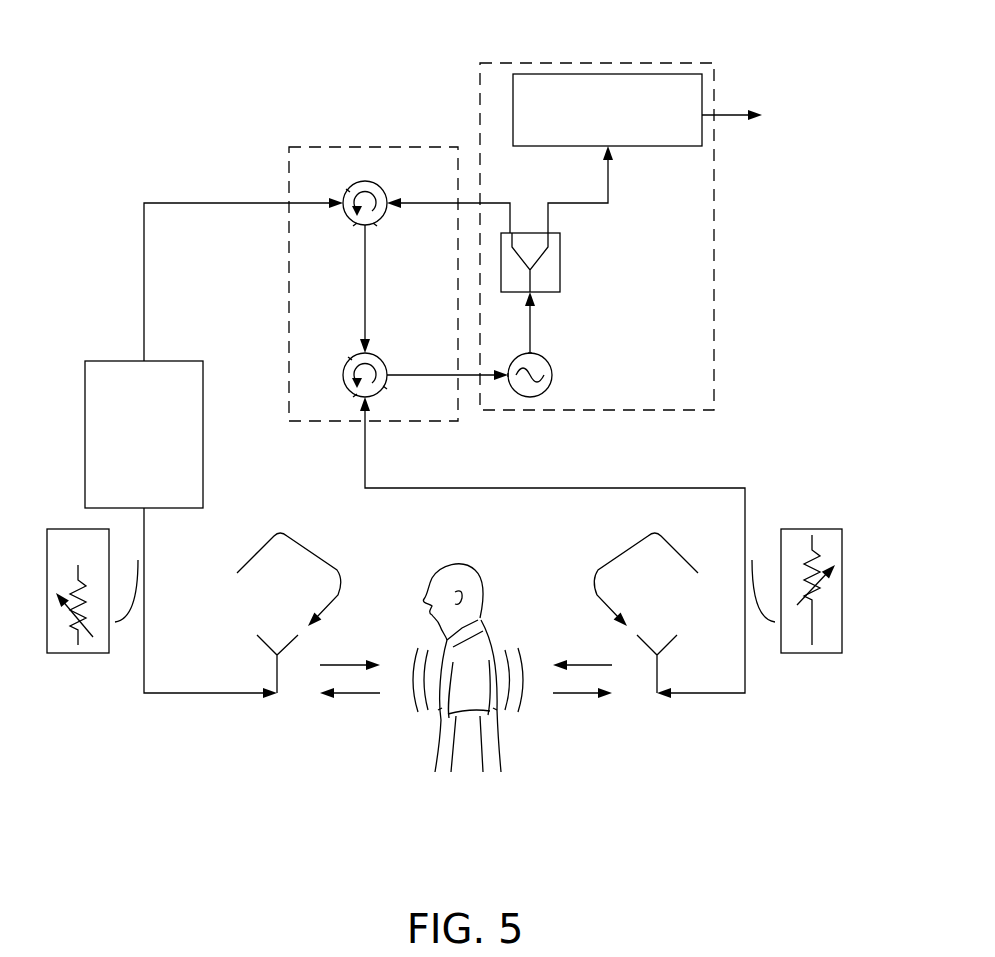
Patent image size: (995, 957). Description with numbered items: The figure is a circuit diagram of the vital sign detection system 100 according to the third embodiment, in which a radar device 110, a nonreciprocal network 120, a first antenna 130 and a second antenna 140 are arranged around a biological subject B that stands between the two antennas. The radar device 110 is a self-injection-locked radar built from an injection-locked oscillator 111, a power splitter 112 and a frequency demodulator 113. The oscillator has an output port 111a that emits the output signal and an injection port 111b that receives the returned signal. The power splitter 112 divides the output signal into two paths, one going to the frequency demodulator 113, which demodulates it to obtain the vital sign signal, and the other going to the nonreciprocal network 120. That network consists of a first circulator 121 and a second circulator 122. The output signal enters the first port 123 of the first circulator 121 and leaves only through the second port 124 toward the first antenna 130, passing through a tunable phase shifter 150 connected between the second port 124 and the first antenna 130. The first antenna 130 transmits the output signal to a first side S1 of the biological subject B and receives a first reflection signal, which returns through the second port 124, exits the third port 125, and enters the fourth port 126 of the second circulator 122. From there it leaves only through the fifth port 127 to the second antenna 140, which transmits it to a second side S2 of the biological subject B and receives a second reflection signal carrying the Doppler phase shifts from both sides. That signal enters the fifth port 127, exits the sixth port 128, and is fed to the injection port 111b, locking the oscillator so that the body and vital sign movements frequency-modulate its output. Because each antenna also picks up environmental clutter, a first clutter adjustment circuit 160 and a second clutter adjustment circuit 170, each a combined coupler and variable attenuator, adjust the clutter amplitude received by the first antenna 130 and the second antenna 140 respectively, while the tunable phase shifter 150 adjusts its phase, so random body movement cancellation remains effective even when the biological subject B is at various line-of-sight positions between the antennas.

The vital sign detection system 100 is at (207, 99).
The radar device 110 is at (716, 230).
The injection-locked oscillator 111 is at (552, 365).
The output port 111a is at (540, 355).
The injection port 111b is at (515, 390).
The power splitter 112 is at (560, 270).
The frequency demodulator 113 is at (667, 74).
The nonreciprocal network 120 is at (285, 165).
The first circulator 121 is at (363, 181).
The second circulator 122 is at (343, 375).
The first port 123 is at (375, 225).
The second port 124 is at (348, 188).
The third port 125 is at (355, 226).
The fourth port 126 is at (350, 357).
The fifth port 127 is at (355, 397).
The sixth port 128 is at (385, 388).
The first antenna 130 is at (280, 680).
The second antenna 140 is at (655, 670).
The tunable phase shifter 150 is at (115, 361).
The first clutter adjustment circuit 160 is at (66, 653).
The second clutter adjustment circuit 170 is at (797, 653).
The biological subject B is at (504, 606).
The first side S1 is at (440, 710).
The second side S2 is at (495, 710).